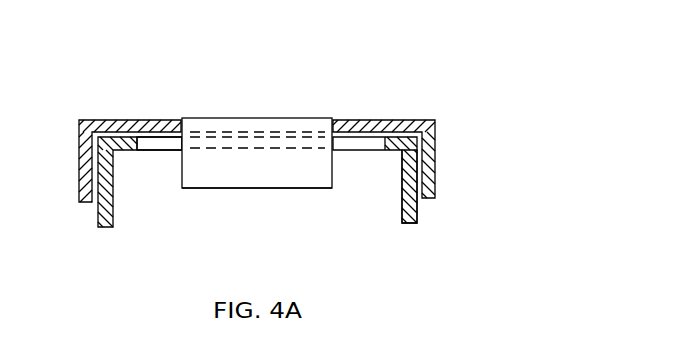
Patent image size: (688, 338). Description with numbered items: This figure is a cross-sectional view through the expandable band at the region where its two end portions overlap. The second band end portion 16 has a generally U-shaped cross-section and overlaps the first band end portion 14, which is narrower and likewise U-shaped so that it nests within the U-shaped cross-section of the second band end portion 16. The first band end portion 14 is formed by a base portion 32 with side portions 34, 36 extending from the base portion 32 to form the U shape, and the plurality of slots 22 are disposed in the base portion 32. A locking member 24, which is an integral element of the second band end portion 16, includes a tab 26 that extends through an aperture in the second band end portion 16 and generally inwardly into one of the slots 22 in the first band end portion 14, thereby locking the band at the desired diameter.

The locking member 24 is at (263, 74).
The second band end portion 16 is at (438, 154).
The first band end portion 14 is at (400, 172).
The slots 22 is at (163, 147).
The tab 26 is at (247, 188).
The base portion 32 is at (132, 150).
The side portion 34 is at (97, 212).
The side portion 36 is at (419, 205).